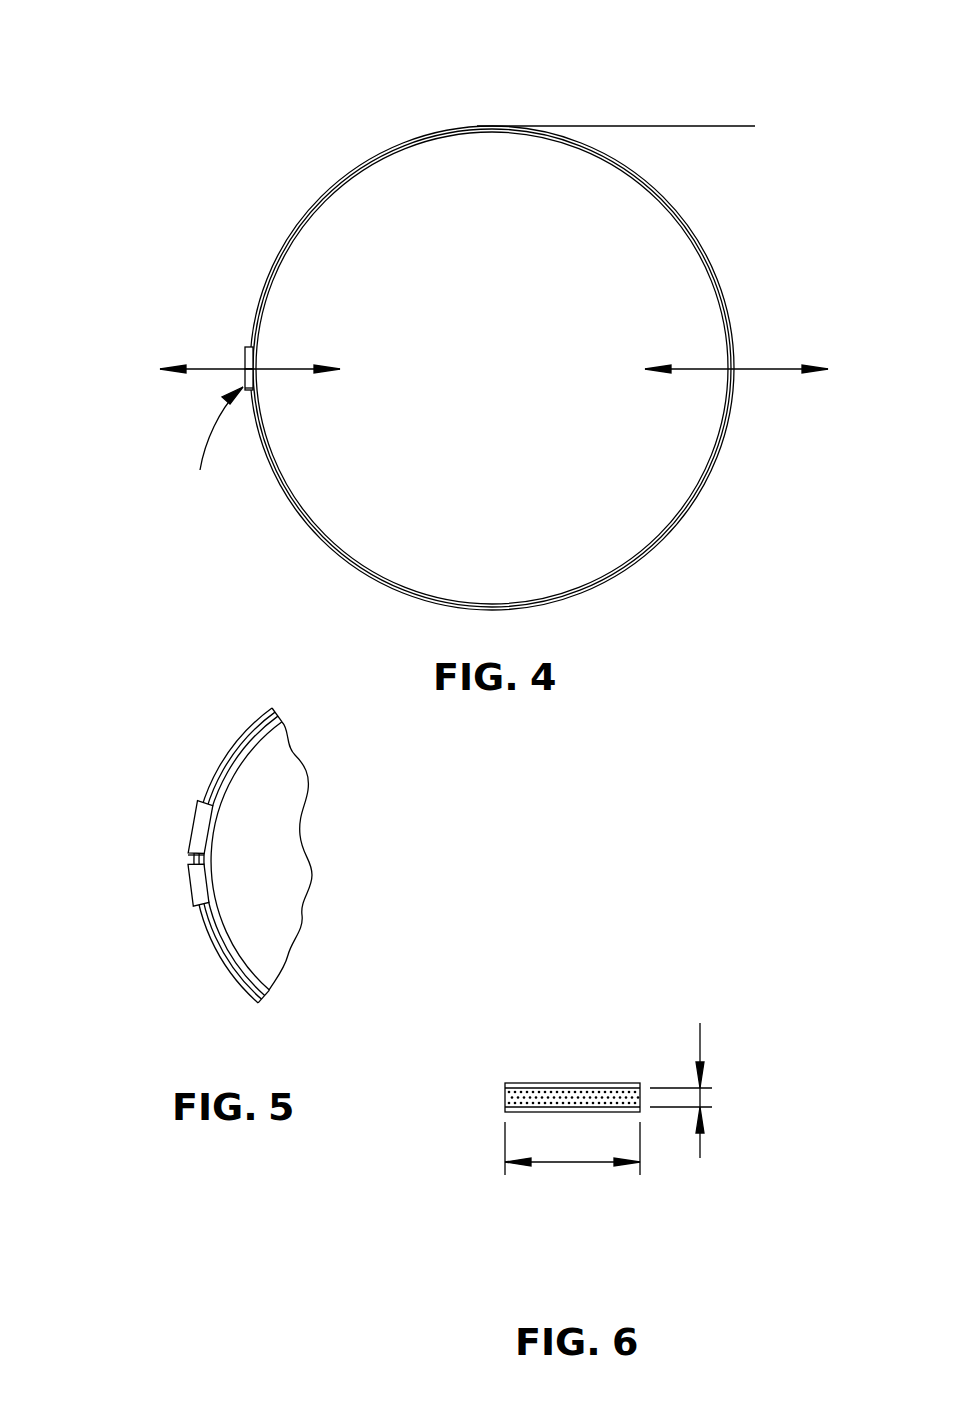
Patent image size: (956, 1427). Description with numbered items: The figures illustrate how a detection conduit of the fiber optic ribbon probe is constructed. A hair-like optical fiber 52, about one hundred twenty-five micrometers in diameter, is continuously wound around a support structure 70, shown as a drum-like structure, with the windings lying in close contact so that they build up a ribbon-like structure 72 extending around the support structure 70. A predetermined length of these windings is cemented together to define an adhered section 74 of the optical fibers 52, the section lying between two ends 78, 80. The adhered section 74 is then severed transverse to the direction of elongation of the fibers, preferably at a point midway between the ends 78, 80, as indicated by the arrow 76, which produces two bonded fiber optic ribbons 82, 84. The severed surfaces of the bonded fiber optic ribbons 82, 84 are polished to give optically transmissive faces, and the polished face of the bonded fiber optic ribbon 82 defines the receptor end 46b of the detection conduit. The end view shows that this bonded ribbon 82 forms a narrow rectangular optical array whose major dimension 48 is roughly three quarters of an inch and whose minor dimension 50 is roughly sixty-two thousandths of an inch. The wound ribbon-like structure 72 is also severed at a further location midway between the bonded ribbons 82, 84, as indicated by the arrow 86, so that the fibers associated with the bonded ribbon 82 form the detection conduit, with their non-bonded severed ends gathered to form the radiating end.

In FIG. 4, the support structure 70 is at (495, 368).
In FIG. 5, the support structure 70 is at (210, 828).
In FIG. 4, the ribbon-like structure 72 is at (318, 197).
In FIG. 4, the optical fiber 52 is at (680, 127).
In FIG. 5, the optical fiber 52 is at (222, 765).
In FIG. 6, the optical fiber 52 is at (569, 1092).
In FIG. 4, the end of adhered section 78 is at (180, 329).
In FIG. 4, the bonded fiber optic ribbon 82 is at (245, 360).
In FIG. 5, the bonded fiber optic ribbon 82 is at (190, 830).
In FIG. 6, the bonded fiber optic ribbon 82 is at (572, 1032).
In FIG. 4, the bonded fiber optic ribbon 84 is at (243, 375).
In FIG. 5, the bonded fiber optic ribbon 84 is at (190, 887).
In FIG. 4, the arrow 76 is at (200, 369).
In FIG. 4, the arrow 86 is at (765, 370).
In FIG. 4, the adhered section 74 is at (245, 388).
In FIG. 4, the end of adhered section 80 is at (214, 449).
In FIG. 5, the receptor end 46b is at (187, 861).
In FIG. 6, the receptor end 46b is at (620, 1083).
In FIG. 6, the minor dimension 50 is at (700, 1048).
In FIG. 6, the major dimension 48 is at (568, 1163).